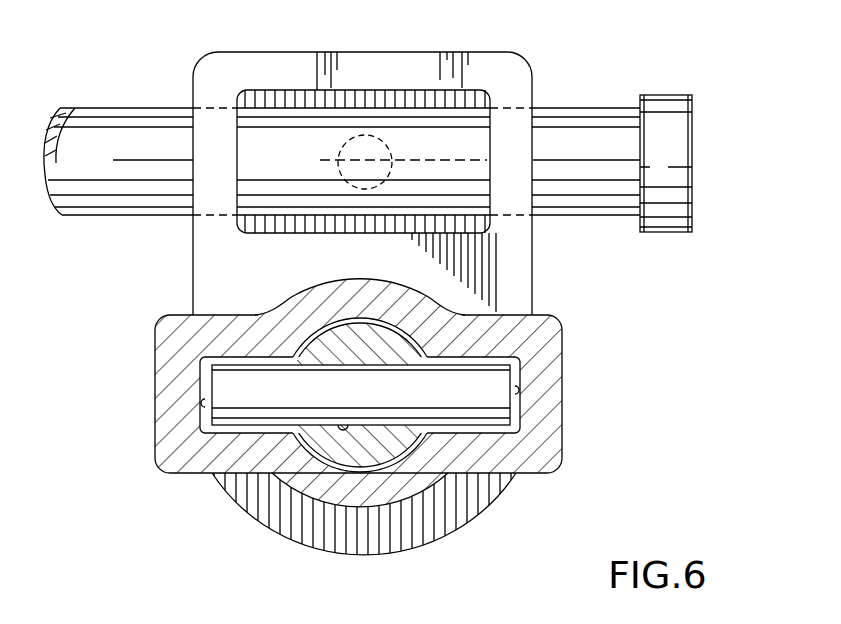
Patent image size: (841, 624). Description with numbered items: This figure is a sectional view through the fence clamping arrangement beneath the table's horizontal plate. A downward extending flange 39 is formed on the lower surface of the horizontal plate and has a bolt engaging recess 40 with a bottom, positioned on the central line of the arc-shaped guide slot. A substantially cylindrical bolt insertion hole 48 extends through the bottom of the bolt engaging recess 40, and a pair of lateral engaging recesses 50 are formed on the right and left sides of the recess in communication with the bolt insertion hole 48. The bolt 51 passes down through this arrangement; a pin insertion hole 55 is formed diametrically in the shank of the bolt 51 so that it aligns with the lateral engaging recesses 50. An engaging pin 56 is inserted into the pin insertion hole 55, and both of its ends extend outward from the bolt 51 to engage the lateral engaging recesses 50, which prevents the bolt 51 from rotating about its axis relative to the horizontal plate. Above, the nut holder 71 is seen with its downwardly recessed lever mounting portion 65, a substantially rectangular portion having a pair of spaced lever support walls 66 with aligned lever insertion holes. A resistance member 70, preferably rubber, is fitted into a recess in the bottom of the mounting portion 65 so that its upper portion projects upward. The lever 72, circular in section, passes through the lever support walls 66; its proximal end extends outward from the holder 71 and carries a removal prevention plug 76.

The flange 39 is at (547, 358).
The bolt engaging recess 40 is at (482, 480).
The bolt insertion hole 48 is at (272, 497).
The lateral engaging recesses 50 is at (203, 403).
The bolt 51 is at (395, 440).
The pin insertion hole 55 is at (343, 428).
The engaging pin 56 is at (487, 383).
The lever mounting portion 65 is at (502, 75).
The lever support walls 66 is at (208, 100).
The resistance member 70 is at (348, 152).
The nut holder 71 is at (192, 275).
The lever 72 is at (70, 183).
The removal prevention plug 76 is at (678, 160).